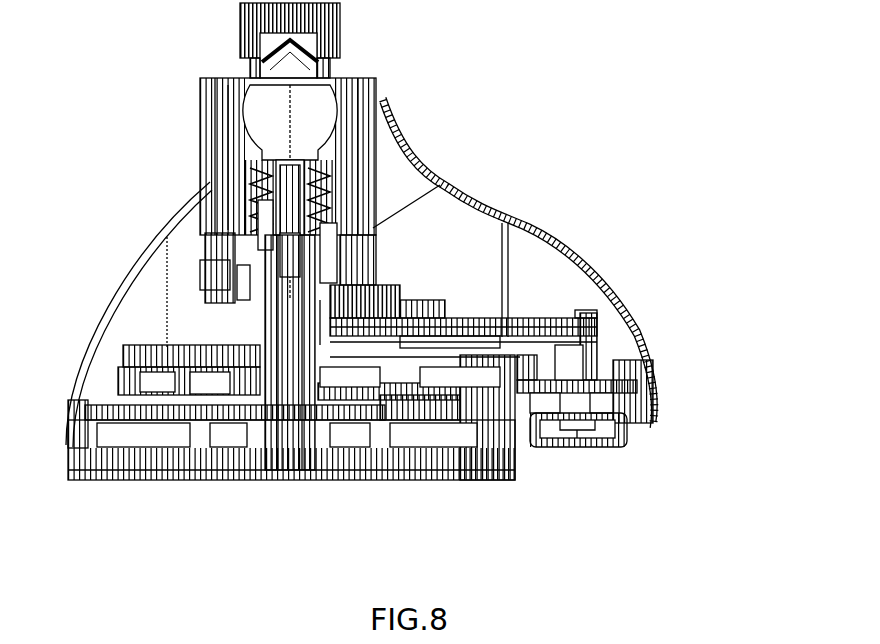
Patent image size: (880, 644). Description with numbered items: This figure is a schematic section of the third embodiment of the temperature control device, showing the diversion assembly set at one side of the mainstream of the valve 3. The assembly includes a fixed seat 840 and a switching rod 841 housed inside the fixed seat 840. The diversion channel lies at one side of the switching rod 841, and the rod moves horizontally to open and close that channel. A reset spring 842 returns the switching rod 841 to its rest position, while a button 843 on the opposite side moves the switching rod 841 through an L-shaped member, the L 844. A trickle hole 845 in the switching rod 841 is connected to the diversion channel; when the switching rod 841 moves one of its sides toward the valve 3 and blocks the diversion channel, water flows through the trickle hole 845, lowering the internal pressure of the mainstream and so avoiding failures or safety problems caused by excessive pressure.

The valve 3 is at (482, 230).
The fixed seat 840 is at (372, 282).
The trickle hole 845 is at (410, 300).
The switching rod 841 is at (388, 323).
The reset spring 842 is at (540, 352).
The L 844 is at (548, 357).
The button 843 is at (578, 452).